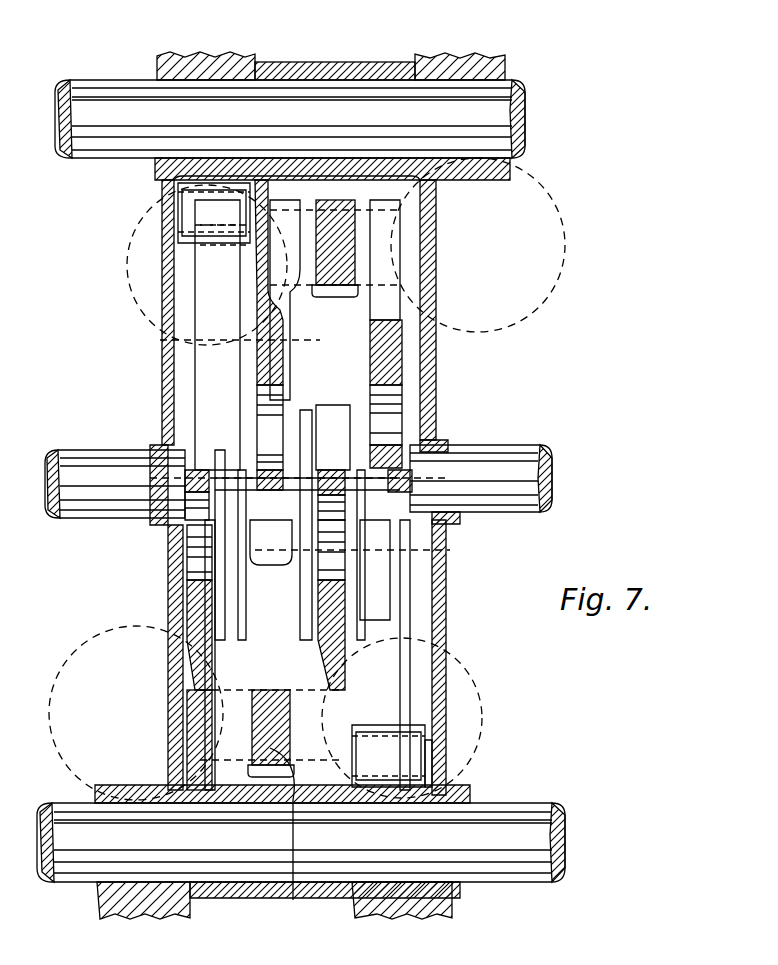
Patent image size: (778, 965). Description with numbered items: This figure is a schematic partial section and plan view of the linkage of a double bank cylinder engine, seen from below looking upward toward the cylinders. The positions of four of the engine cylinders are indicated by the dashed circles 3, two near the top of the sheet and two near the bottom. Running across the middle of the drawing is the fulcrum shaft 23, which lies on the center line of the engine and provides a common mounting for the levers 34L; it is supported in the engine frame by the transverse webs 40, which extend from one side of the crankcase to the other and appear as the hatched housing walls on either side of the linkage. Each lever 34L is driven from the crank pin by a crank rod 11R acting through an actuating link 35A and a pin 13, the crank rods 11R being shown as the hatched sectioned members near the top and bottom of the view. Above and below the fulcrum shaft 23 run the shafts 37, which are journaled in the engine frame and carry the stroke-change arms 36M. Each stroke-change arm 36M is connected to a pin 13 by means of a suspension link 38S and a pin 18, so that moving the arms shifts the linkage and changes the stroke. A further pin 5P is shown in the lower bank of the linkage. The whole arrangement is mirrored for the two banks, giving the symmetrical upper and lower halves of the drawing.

The circles indicating cylinder positions 3 is at (565, 222).
The pin 5P is at (428, 750).
The crank rod 11R is at (303, 485).
The pin 13 is at (392, 258).
The pin 18 is at (400, 426).
The fulcrum shaft 23 is at (505, 445).
The lever 34L is at (200, 305).
The actuating link 35A is at (318, 355).
The stroke-change arm 36M is at (362, 62).
The shaft 37 is at (518, 94).
The suspension link 38S is at (385, 330).
The transverse web 40 is at (165, 540).